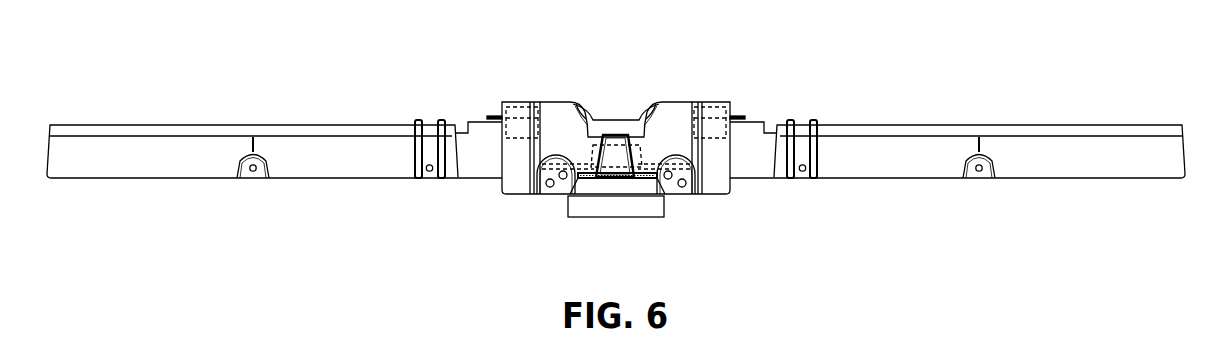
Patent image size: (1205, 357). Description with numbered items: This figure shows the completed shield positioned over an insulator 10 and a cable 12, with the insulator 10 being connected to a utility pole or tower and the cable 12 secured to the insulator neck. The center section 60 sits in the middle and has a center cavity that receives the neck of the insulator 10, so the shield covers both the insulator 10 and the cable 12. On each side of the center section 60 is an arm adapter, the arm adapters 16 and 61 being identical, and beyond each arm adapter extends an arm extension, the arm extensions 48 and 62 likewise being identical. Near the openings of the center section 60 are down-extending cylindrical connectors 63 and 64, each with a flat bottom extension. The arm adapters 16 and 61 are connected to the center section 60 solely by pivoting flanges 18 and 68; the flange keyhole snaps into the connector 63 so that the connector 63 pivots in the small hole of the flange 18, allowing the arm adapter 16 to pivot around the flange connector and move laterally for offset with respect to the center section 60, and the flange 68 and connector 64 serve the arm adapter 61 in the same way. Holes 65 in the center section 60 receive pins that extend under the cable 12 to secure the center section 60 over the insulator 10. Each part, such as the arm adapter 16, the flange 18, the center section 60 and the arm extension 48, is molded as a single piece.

The center section 60 is at (670, 62).
The arm extension 48 is at (302, 125).
The arm extension 62 is at (882, 125).
The arm adapter 16 is at (477, 118).
The arm adapter 61 is at (757, 120).
The flange 18 is at (512, 112).
The flange 68 is at (723, 108).
The cylindrical connector 63 is at (527, 108).
The cylindrical connector 64 is at (702, 108).
The holes 65 is at (554, 190).
The cable 12 is at (683, 188).
The insulator 10 is at (638, 208).